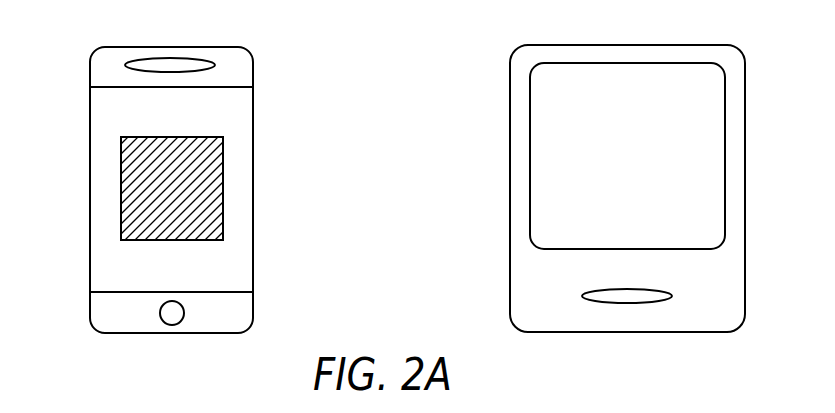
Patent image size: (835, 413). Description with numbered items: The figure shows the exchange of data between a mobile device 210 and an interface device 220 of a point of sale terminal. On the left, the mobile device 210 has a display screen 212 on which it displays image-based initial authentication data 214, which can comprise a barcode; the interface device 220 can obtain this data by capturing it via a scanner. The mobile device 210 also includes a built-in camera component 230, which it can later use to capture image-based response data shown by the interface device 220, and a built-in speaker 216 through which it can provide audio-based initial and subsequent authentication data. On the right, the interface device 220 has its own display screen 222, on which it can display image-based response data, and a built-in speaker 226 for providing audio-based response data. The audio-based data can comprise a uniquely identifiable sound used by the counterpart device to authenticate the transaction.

The mobile device 210 is at (255, 63).
The display screen 212 is at (107, 272).
The image-based initial authentication data 214 is at (213, 178).
The built-in speaker 216 is at (170, 67).
The built-in camera component 230 is at (177, 313).
The interface device 220 is at (745, 63).
The display screen 222 is at (545, 225).
The built-in speaker 226 is at (628, 296).